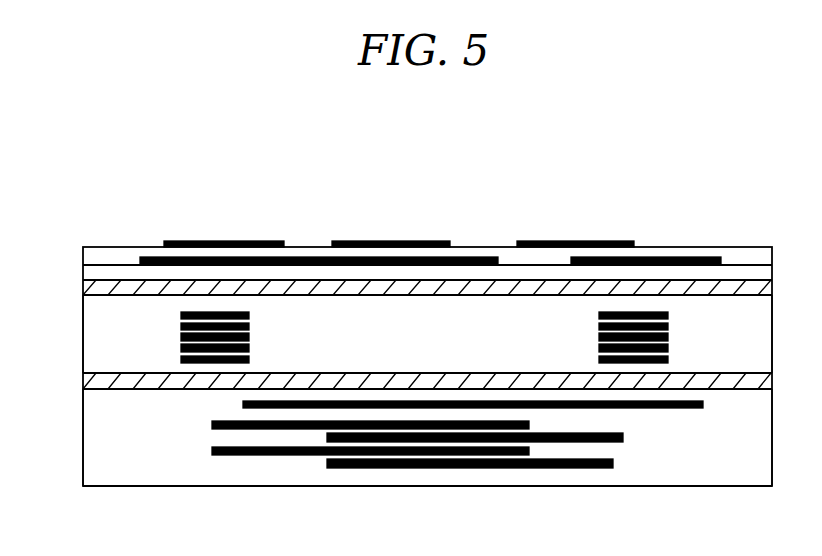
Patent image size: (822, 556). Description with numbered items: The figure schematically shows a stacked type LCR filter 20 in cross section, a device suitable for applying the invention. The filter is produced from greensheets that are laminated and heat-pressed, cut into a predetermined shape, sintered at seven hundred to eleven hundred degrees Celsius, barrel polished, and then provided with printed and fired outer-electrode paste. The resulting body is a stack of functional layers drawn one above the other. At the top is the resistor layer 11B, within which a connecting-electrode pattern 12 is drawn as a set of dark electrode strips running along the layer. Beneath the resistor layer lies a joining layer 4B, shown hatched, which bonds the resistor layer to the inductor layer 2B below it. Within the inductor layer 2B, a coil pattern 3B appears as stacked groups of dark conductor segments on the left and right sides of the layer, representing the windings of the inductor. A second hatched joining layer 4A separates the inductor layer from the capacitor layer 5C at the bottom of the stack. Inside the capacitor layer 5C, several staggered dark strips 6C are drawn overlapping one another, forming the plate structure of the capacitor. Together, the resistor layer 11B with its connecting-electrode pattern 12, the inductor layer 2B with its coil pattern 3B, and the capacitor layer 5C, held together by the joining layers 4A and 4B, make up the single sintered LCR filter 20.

The LCR filter 20 is at (698, 247).
The resistor layer 11B is at (83, 256).
The connecting-electrode pattern 12 is at (416, 258).
The joining layer 4B is at (83, 290).
The inductor layer 2B is at (97, 339).
The coil pattern 3B is at (209, 312).
The joining layer 4A is at (83, 381).
The capacitor layer 5C is at (93, 446).
The lower electrodes 6C is at (468, 468).